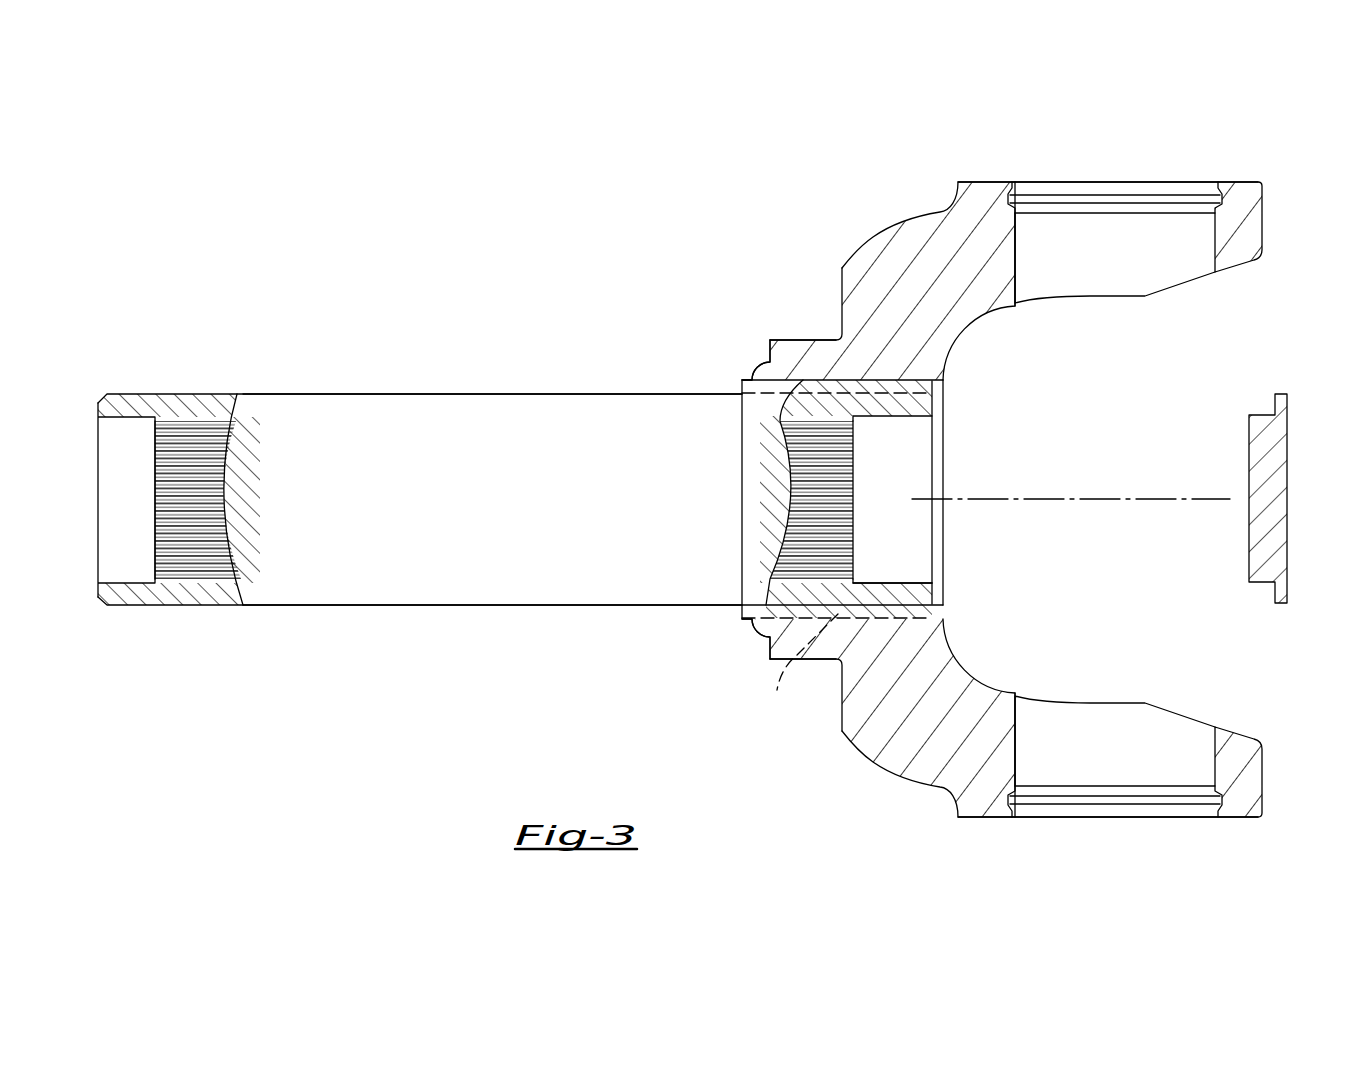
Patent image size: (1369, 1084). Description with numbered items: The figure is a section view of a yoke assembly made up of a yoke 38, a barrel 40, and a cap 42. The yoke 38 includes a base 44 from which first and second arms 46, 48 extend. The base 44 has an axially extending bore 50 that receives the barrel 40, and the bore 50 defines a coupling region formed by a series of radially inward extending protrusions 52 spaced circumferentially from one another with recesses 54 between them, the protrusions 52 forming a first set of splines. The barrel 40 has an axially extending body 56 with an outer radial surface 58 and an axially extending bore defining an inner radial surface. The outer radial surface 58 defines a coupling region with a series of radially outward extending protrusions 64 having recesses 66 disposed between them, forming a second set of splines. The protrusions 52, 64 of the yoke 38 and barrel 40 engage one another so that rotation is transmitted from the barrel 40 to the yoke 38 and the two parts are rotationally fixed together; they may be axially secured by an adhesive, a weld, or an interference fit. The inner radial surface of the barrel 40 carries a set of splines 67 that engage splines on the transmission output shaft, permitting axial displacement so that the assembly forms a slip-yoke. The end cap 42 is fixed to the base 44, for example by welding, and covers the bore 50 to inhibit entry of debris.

The yoke 38 is at (1115, 162).
The barrel 40 is at (318, 351).
The cap 42 is at (1287, 460).
The base 44 is at (793, 340).
The first arm 46 is at (990, 182).
The second arm 48 is at (1000, 817).
The bore 50 is at (942, 411).
The protrusions 52 is at (900, 595).
The recesses 54 is at (790, 417).
The body 56 is at (437, 612).
The outer radial surface 58 is at (437, 410).
The protrusions 64 is at (885, 355).
The recesses 66 is at (777, 690).
The splines 67 is at (165, 512).